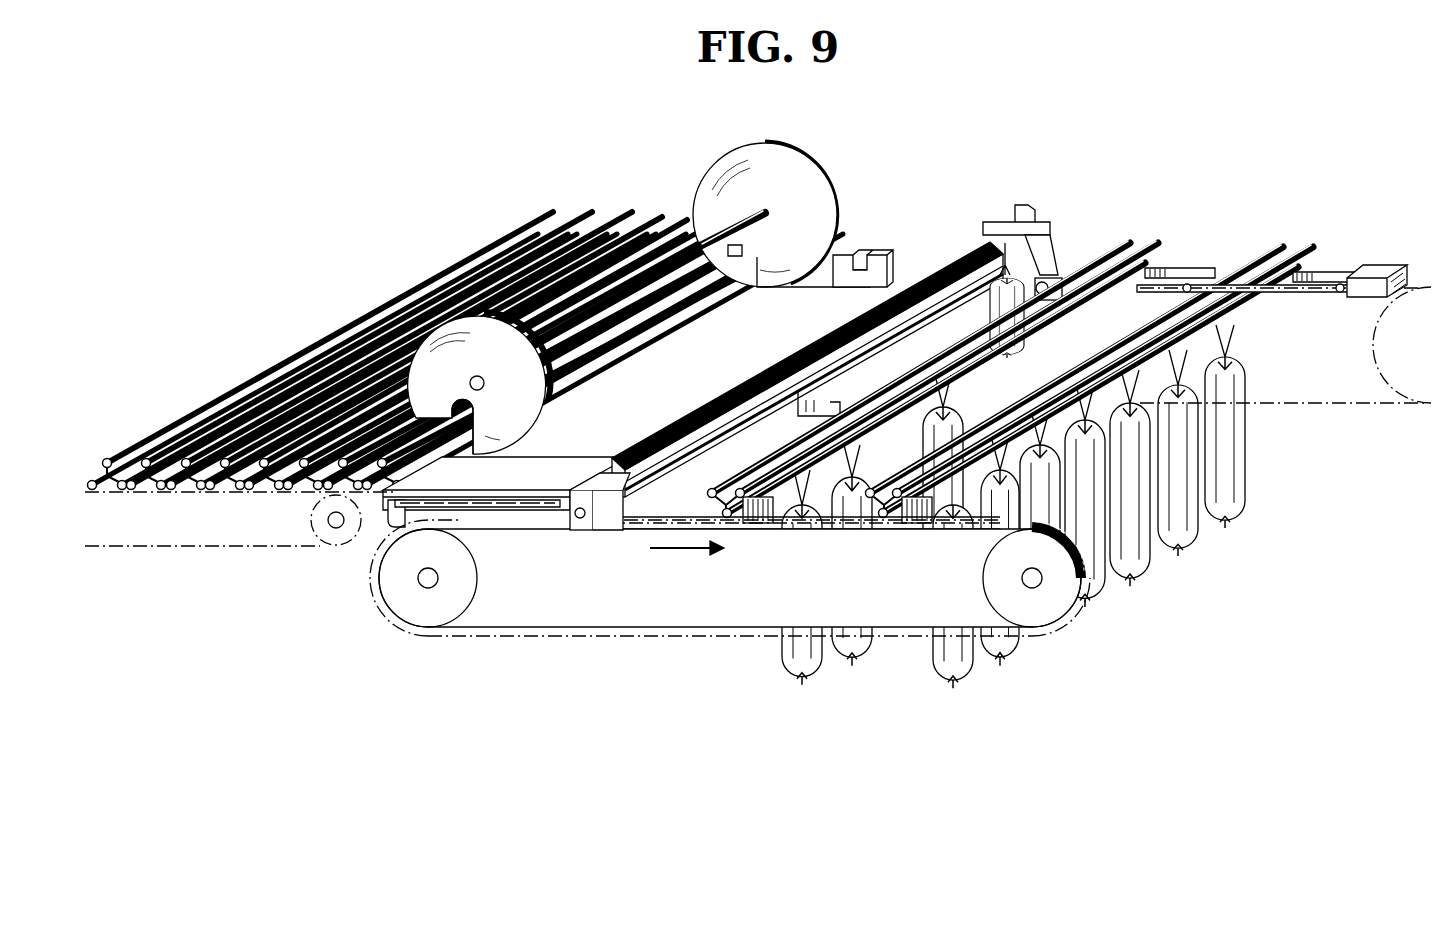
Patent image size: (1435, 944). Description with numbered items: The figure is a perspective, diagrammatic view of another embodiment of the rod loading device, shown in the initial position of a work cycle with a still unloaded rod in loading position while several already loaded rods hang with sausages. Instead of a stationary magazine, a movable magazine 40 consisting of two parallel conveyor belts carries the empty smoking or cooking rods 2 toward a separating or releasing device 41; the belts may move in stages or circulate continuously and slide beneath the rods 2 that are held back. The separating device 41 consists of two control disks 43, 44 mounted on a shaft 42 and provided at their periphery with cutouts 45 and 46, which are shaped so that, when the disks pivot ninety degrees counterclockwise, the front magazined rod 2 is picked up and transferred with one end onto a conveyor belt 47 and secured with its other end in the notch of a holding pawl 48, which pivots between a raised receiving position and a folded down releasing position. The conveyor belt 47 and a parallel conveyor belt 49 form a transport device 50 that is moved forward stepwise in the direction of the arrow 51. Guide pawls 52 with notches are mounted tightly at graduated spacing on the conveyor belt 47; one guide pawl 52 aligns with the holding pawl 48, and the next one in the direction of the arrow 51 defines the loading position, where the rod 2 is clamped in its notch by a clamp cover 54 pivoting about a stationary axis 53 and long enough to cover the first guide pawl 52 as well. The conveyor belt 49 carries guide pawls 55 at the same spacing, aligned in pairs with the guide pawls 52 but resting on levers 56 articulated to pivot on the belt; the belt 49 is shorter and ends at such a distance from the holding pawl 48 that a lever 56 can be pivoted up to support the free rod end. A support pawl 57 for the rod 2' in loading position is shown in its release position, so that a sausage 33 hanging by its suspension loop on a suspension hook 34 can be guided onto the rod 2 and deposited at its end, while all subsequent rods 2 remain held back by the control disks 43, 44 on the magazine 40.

The smoking or cooking rod 2 is at (466, 351).
The smoking or cooking rod in loading position 2' is at (807, 369).
The sausage 33 is at (990, 318).
The suspension hook 34 is at (1006, 222).
The movable magazine 40 is at (240, 555).
The separating or releasing device 41 is at (800, 202).
The shaft 42 is at (737, 230).
The control disk 43 is at (540, 408).
The control disk 44 is at (838, 208).
The cutout 45 is at (448, 412).
The cutout 46 is at (757, 256).
The conveyor belt 47 is at (660, 520).
The holding pawl 48 is at (887, 262).
The conveyor belt 49 is at (1300, 296).
The transport device 50 is at (684, 645).
The arrow 51 is at (692, 552).
The guide pawl 52 is at (608, 512).
The stationary axis 53 is at (533, 522).
The clamp cover 54 is at (506, 492).
The guide pawl 55 is at (1340, 270).
The lever 56 is at (1372, 268).
The support pawl 57 is at (797, 410).